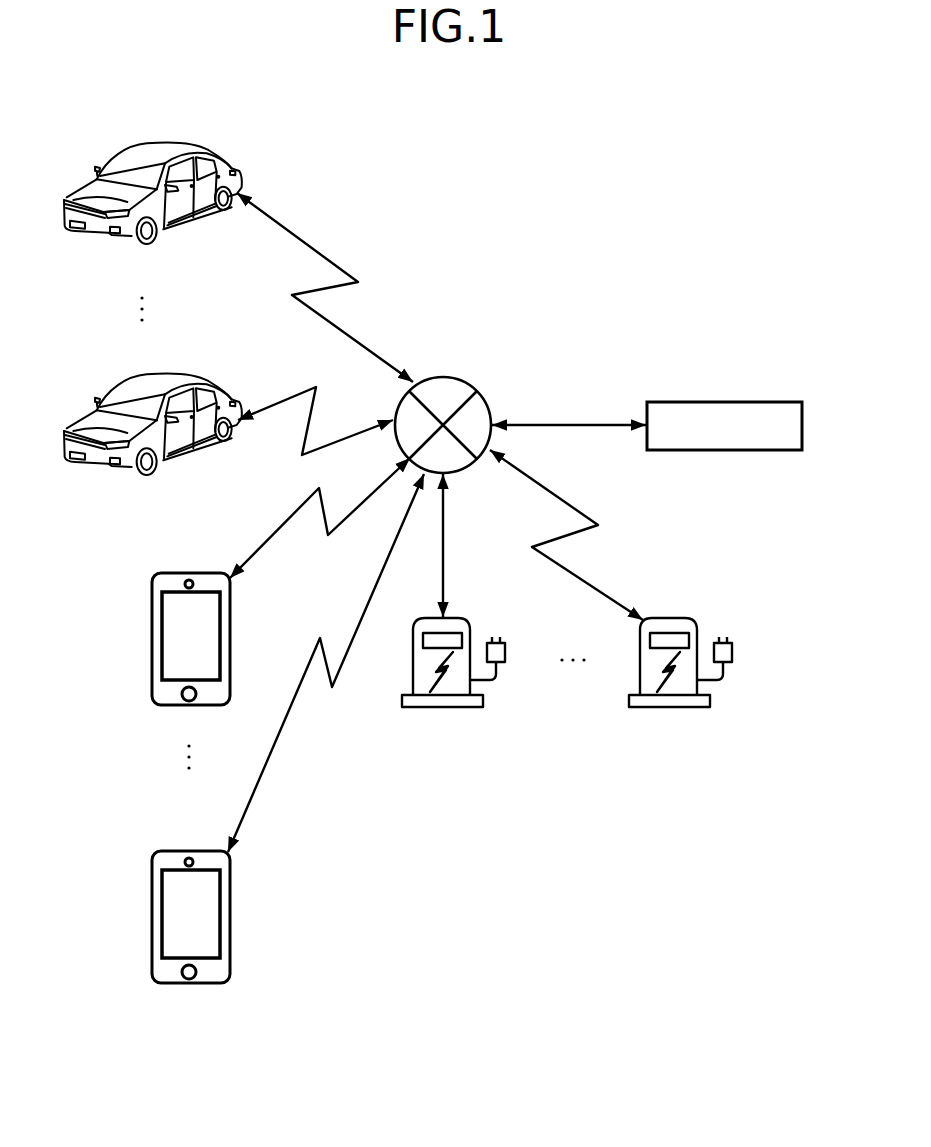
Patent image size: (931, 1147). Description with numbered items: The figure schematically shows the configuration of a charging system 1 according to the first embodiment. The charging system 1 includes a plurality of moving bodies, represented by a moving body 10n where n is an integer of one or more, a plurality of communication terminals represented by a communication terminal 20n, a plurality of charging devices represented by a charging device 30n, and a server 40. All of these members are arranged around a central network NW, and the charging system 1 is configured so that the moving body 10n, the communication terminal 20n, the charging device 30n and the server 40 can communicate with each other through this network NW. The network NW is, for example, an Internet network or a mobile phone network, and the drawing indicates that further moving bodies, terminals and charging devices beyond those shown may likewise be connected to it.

The charging system 1 is at (668, 298).
The moving body 10n is at (170, 144).
The communication terminal 20n is at (168, 852).
The charging device 30n is at (455, 620).
The server 40 is at (746, 402).
The network NW is at (446, 378).